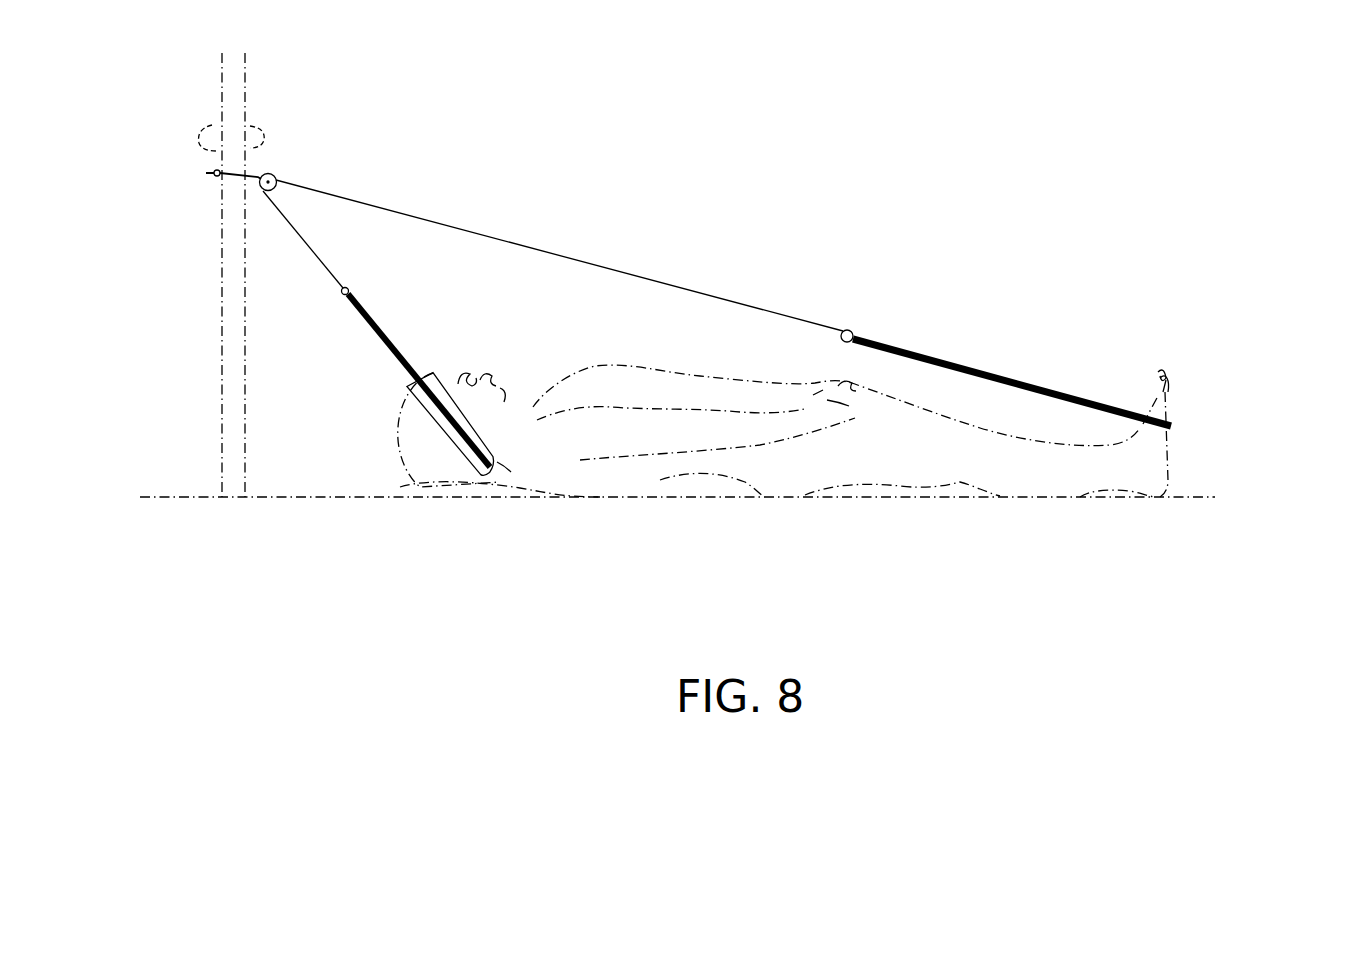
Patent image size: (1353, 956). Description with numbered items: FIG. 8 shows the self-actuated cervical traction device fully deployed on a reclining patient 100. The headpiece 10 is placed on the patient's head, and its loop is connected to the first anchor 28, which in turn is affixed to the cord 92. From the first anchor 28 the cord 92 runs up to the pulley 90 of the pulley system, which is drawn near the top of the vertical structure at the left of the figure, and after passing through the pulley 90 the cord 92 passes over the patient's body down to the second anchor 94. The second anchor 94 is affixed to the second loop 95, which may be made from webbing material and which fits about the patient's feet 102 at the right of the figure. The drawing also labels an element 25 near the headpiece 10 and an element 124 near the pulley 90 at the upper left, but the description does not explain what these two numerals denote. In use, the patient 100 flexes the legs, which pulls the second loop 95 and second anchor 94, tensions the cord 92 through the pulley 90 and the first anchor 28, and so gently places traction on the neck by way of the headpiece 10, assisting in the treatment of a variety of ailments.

The headpiece 10 is at (440, 430).
The housing 25 is at (370, 332).
The first anchor 28 is at (345, 292).
The pulley 90 is at (271, 174).
The cord 92 is at (553, 250).
The second anchor 94 is at (850, 330).
The second loop 95 is at (1015, 375).
The patient 100 is at (665, 366).
The feet 102 is at (1155, 455).
The anchor 124 is at (216, 178).